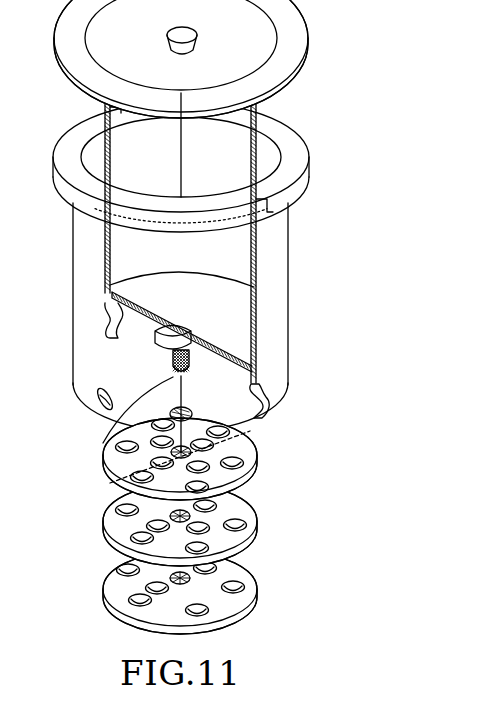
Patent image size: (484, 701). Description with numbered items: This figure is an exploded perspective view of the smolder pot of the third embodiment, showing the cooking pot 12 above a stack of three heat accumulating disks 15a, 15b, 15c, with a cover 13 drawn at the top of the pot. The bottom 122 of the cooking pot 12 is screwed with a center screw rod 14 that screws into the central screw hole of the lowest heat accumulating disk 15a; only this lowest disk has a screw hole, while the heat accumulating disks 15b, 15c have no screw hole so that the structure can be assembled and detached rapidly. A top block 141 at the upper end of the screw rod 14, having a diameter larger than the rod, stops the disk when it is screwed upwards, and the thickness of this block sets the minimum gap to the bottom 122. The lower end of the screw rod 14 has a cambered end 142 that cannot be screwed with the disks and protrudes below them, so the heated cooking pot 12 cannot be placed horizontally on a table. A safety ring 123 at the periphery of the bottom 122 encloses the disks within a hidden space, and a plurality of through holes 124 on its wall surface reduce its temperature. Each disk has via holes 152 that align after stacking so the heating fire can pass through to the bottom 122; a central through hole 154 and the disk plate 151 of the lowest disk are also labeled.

The cooking pot 12 is at (287, 252).
The top cover 13 is at (297, 33).
The center screw rod 14 is at (192, 358).
The bottom 122 is at (237, 342).
The safety ring 123 is at (108, 323).
The through hole 124 is at (263, 397).
The top block 141 is at (163, 347).
The cambered end 142 is at (118, 428).
The heat accumulating disk 15a is at (196, 593).
The heat accumulating disk 15b is at (258, 520).
The heat accumulating disk 15c is at (258, 452).
The disk plate 151 is at (112, 592).
The via hole 152 is at (258, 538).
The central through hole 154 is at (253, 498).